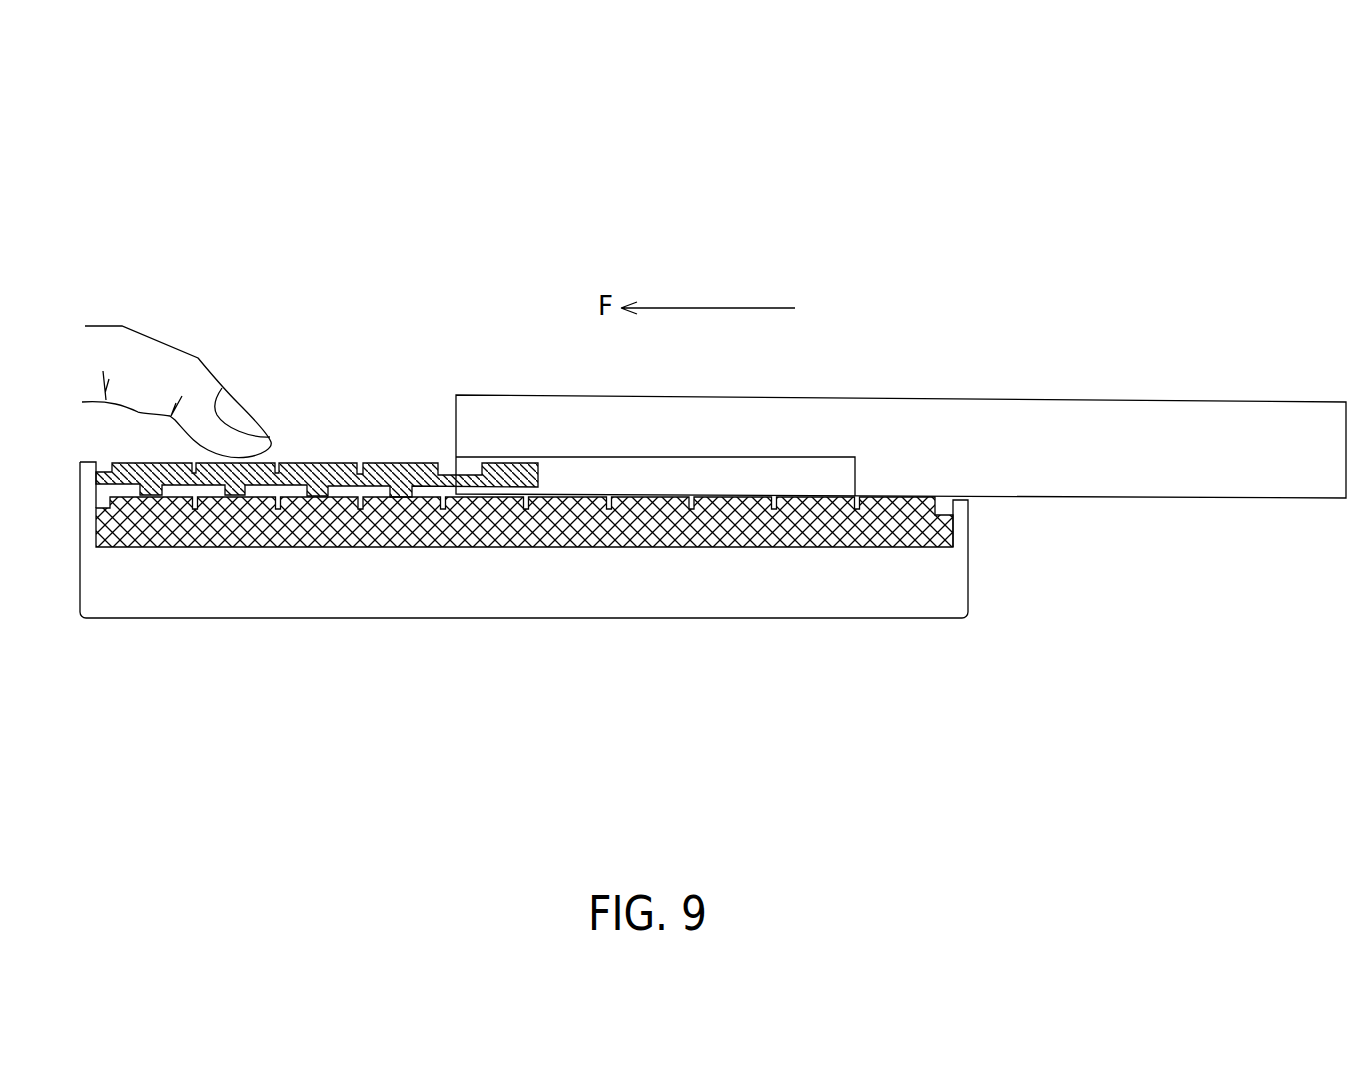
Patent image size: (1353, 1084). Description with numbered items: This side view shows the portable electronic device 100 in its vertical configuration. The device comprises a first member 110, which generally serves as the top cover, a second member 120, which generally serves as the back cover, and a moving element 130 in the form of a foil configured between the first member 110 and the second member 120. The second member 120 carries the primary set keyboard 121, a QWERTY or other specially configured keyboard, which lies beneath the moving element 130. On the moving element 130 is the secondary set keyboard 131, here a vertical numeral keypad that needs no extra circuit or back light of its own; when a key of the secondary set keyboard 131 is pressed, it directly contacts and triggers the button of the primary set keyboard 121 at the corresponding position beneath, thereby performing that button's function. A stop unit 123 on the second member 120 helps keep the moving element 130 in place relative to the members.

The portable electronic device 100 is at (1215, 140).
The first member 110 is at (1170, 400).
The second member 120 is at (826, 622).
The primary set keyboard 121 is at (580, 537).
The stop unit 123 is at (90, 478).
The moving element 130 is at (406, 441).
The secondary set keyboard 131 is at (320, 462).